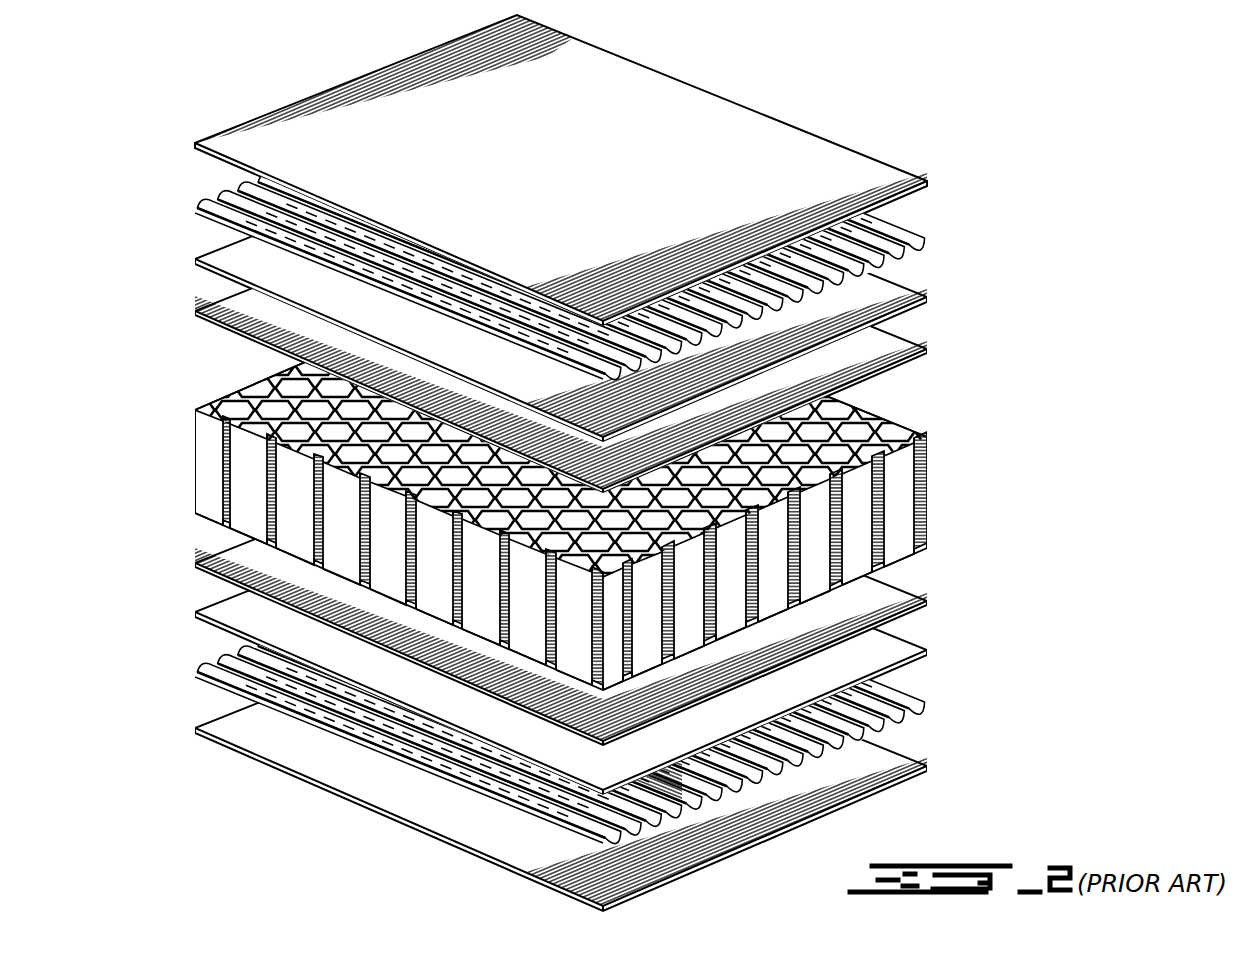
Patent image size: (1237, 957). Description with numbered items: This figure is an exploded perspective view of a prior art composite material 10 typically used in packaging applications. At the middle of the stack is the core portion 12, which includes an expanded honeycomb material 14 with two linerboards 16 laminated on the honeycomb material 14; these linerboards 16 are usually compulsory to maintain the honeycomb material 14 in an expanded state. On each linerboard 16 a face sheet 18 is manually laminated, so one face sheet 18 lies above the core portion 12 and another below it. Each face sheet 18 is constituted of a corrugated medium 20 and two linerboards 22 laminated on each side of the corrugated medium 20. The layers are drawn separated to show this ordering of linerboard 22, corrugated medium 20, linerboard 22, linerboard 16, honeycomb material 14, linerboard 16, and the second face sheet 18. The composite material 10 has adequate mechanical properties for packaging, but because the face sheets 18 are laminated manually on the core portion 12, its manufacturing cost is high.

The composite material 10 is at (644, 463).
The core portion 12 is at (644, 464).
The expanded honeycomb material 14 is at (597, 480).
The linerboard 16 is at (927, 349).
The face sheet 18 is at (644, 463).
The corrugated medium 20 is at (927, 247).
The linerboard 22 is at (927, 181).